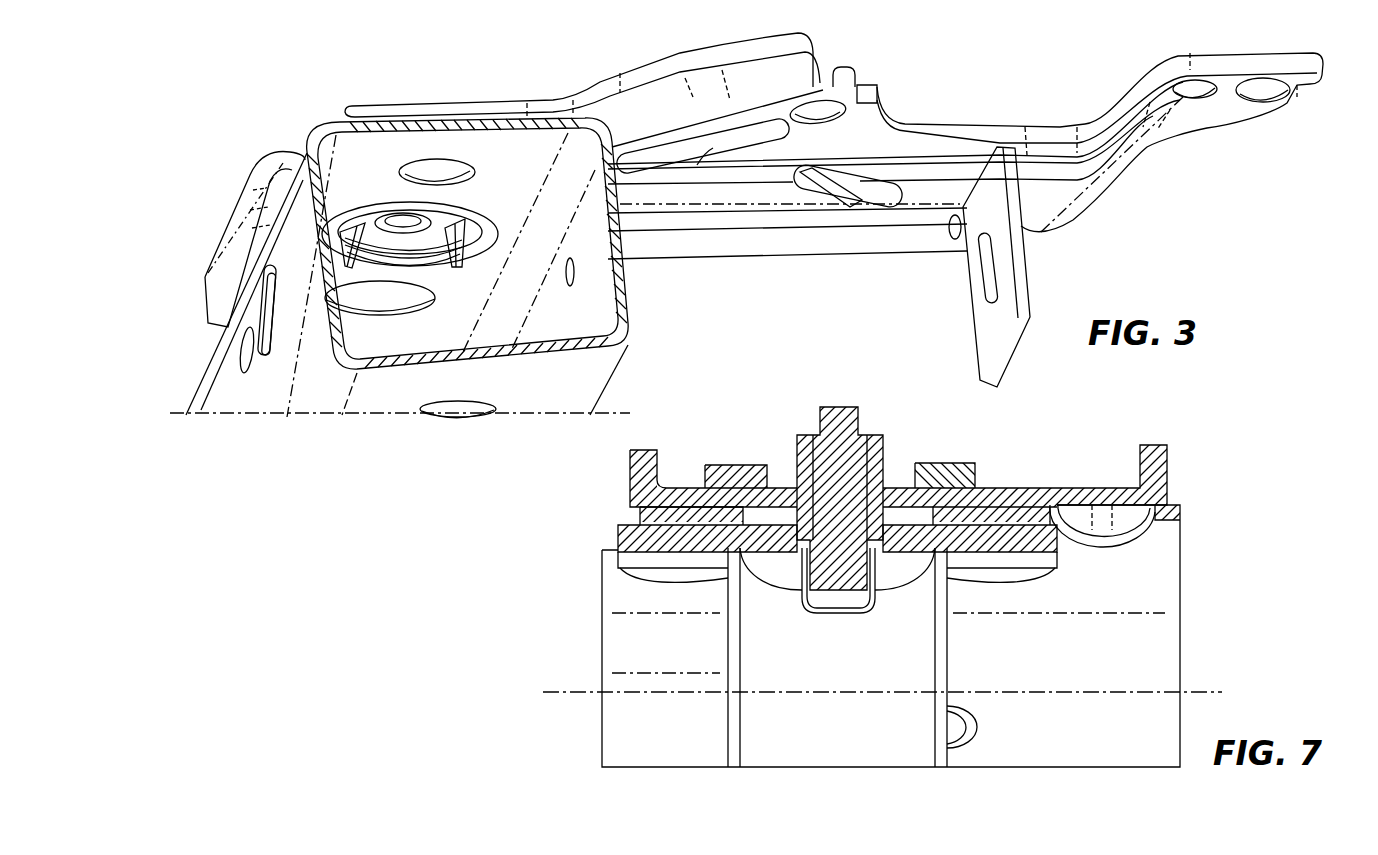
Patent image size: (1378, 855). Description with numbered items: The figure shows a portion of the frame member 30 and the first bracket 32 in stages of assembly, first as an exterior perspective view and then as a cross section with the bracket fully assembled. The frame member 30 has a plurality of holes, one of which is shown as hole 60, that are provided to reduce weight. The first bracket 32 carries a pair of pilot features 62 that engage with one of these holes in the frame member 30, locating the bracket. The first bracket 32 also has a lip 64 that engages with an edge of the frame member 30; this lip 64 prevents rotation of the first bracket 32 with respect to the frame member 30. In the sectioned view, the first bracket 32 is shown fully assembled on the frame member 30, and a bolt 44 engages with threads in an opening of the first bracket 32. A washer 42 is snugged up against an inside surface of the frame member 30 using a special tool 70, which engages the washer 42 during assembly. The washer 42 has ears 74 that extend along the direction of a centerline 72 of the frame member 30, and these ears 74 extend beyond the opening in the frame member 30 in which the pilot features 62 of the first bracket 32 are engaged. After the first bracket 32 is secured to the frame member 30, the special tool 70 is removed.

In FIG. 3, the frame member 30 is at (213, 402).
In FIG. 7, the frame member 30 is at (1148, 648).
In FIG. 3, the first bracket 32 is at (947, 122).
In FIG. 7, the first bracket 32 is at (1150, 460).
In FIG. 7, the washer 42 is at (630, 540).
In FIG. 7, the bolt 44 is at (845, 416).
In FIG. 3, the hole 60 is at (367, 310).
In FIG. 3, the pilot features 62 is at (350, 240).
In FIG. 3, the lip 64 is at (237, 252).
In FIG. 7, the special tool 70 is at (785, 755).
In FIG. 7, the centerline 72 is at (1195, 694).
In FIG. 7, the ears 74 is at (657, 560).